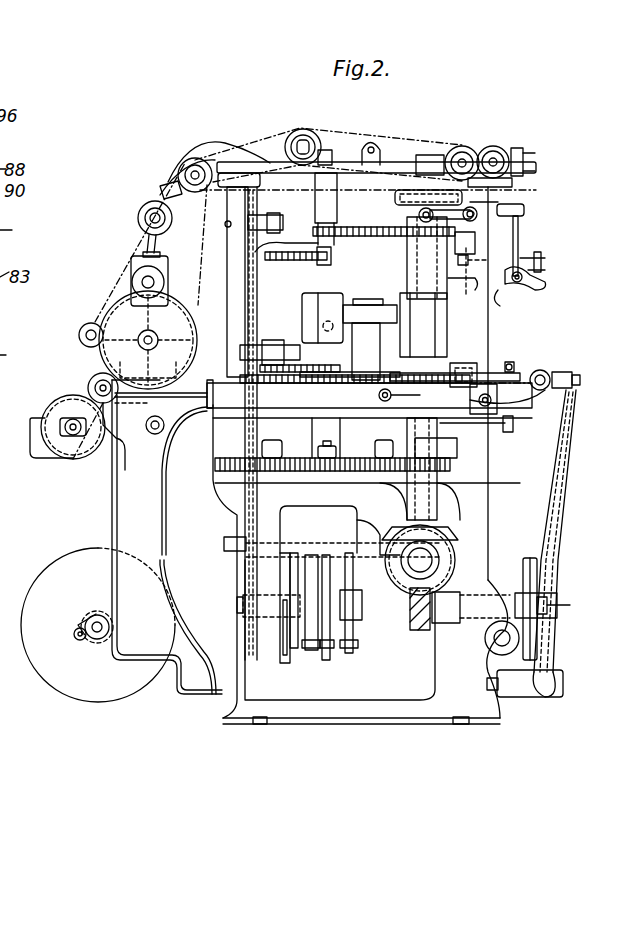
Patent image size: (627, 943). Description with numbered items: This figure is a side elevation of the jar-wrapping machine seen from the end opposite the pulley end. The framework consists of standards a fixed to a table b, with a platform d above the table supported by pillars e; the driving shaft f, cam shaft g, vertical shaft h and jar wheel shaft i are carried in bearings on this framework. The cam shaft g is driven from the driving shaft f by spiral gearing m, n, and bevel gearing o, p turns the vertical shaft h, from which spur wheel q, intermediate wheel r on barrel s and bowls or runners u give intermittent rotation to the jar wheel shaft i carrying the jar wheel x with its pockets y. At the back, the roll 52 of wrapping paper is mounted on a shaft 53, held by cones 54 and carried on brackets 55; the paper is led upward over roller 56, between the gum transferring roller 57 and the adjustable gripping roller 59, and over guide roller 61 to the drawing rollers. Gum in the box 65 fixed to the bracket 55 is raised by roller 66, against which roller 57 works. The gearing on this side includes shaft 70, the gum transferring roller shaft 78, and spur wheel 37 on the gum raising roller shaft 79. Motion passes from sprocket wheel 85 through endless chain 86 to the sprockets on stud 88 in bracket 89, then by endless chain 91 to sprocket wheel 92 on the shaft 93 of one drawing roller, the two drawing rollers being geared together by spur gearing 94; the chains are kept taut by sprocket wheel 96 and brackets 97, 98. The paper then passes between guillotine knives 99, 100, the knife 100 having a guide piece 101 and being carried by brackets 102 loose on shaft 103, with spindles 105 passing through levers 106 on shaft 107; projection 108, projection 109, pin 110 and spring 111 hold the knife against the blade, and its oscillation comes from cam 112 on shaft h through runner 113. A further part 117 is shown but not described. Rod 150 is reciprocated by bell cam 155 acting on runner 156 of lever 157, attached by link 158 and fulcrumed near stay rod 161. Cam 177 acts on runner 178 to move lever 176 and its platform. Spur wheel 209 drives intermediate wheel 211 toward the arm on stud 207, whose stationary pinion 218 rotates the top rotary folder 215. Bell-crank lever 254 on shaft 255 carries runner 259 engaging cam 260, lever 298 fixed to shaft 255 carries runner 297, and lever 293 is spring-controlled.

The spur wheel 37 is at (98, 458).
The roll 52 is at (98, 625).
The shaft 53 is at (80, 640).
The cones 54 is at (90, 618).
The brackets 55 is at (167, 537).
The roller 56 is at (167, 442).
The gum transferring roller 57 is at (92, 384).
The adjustable gripping roller 59 is at (168, 276).
The guide roller 61 is at (380, 145).
The gum box 65 is at (32, 448).
The gum raising roller 66 is at (62, 445).
The shaft 70 is at (155, 340).
The gum transferring roller shaft 78 is at (112, 405).
The gum raising roller shaft 79 is at (66, 418).
The sprocket wheel 85 is at (112, 312).
The endless chain 86 is at (135, 244).
The stud 88 is at (190, 160).
The bracket 89 is at (208, 152).
The endless chain 91 is at (340, 140).
The sprocket wheel 92 is at (460, 146).
The drawing roller shaft 93 is at (512, 185).
The spur gearing 94 is at (490, 146).
The sprocket wheel 96 is at (300, 135).
The bracket 97 is at (160, 188).
The bracket 98 is at (318, 140).
The guillotine knife 99 is at (466, 264).
The guillotine knife 100 is at (449, 262).
The guide piece 101 is at (460, 285).
The brackets 102 is at (503, 305).
The shaft 103 is at (505, 288).
The spindles 105 is at (520, 230).
The levers 106 is at (524, 212).
The shaft 107 is at (498, 202).
The projection 108 is at (535, 281).
The projection 109 is at (543, 262).
The pin 110 is at (538, 258).
The spring 111 is at (542, 270).
The cam 112 is at (398, 200).
The bowl or runner 113 is at (420, 222).
The link 117 is at (482, 201).
The rod 150 is at (545, 367).
The bell cam 155 is at (523, 560).
The runner 156 is at (545, 602).
The lever 157 is at (560, 484).
The link 158 is at (560, 370).
The stay rod 161 is at (496, 645).
The lever 176 is at (500, 362).
The cam 177 is at (455, 386).
The runner 178 is at (448, 360).
The stud 207 is at (340, 192).
The spur wheel 209 is at (350, 363).
The intermediate wheel 211 is at (360, 236).
The top rotary folder 215 is at (268, 278).
The stationary pinion 218 is at (318, 262).
The bell-crank lever 254 is at (305, 640).
The shaft 255 is at (224, 545).
The runner 259 is at (290, 660).
The cam 260 is at (282, 622).
The lever 293 is at (244, 480).
The bowl or runner 297 is at (325, 660).
The lever 298 is at (355, 640).
The standards a is at (212, 432).
The table b is at (323, 399).
The platform d is at (403, 162).
The pillars e is at (488, 310).
The driving shaft f is at (425, 560).
The cam shaft g is at (237, 604).
The vertical shaft h is at (432, 160).
The jar wheel shaft i is at (372, 300).
The spiral gearing m is at (378, 557).
The spiral gearing n is at (418, 630).
The bevel gearing o is at (452, 578).
The bevel gearing p is at (448, 535).
The spur wheel q is at (455, 466).
The intermediate wheel r is at (300, 470).
The barrel s is at (278, 445).
The bowls or runners u is at (340, 452).
The jar wheel x is at (370, 313).
The pockets y is at (318, 300).